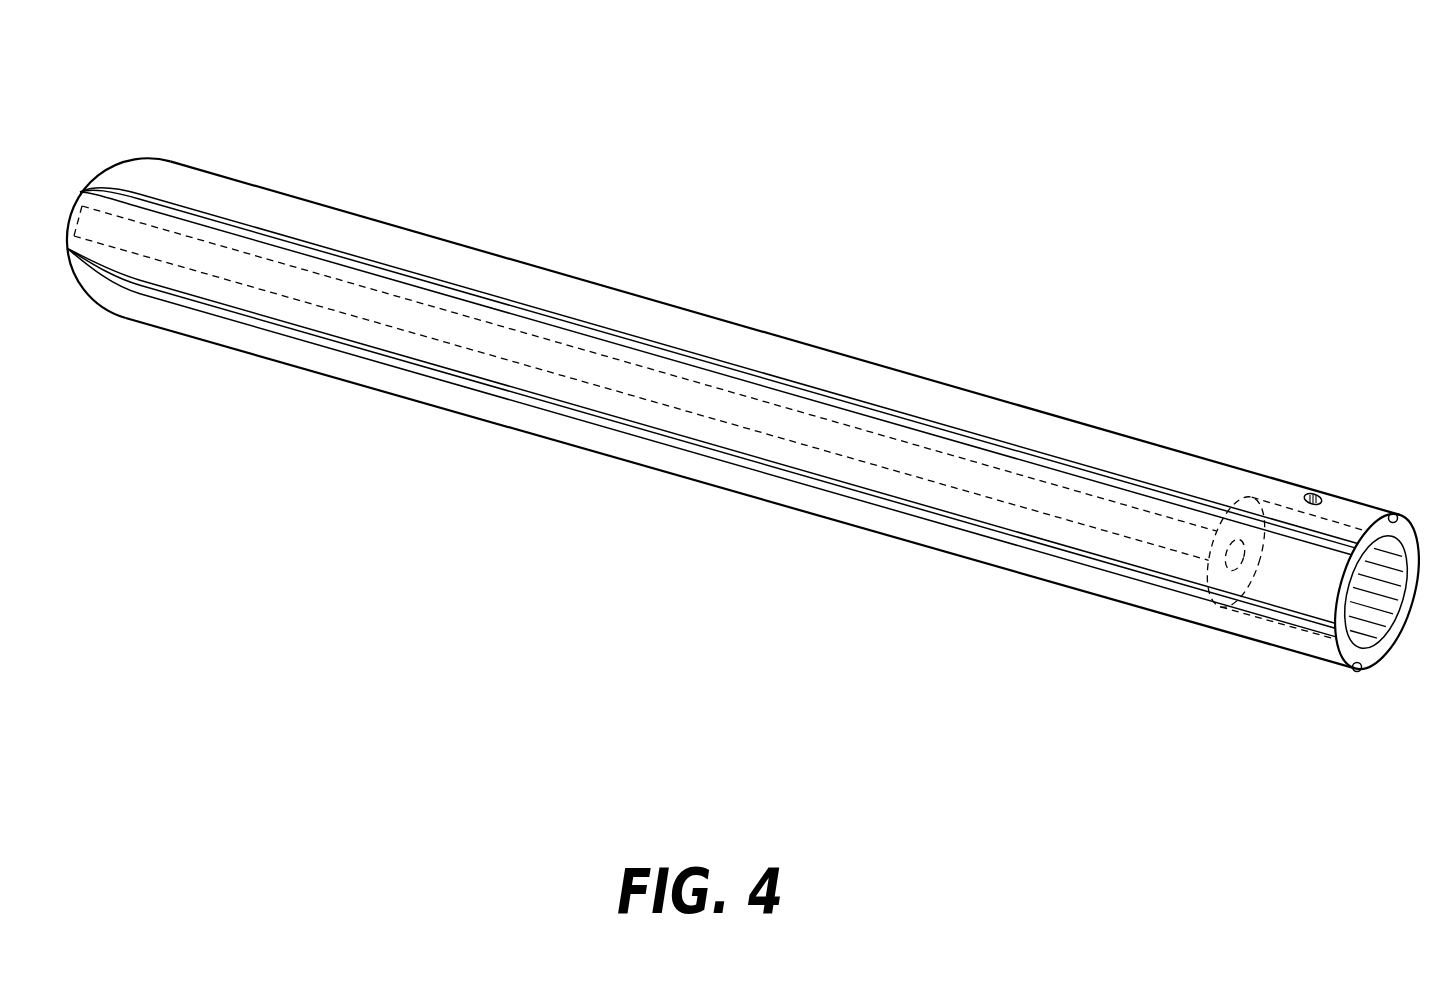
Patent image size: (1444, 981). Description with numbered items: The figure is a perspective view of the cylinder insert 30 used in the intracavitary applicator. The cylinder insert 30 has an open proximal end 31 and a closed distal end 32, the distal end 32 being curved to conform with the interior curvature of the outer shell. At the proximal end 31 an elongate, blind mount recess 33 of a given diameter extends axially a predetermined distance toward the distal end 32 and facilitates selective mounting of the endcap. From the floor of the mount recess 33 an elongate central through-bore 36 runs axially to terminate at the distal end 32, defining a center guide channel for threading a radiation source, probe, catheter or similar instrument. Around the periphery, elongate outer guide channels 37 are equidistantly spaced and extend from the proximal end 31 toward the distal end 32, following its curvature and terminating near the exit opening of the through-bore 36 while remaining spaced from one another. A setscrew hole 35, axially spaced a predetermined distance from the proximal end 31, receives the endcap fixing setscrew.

The cylinder insert 30 is at (763, 338).
The proximal end 31 is at (1388, 694).
The distal end 32 is at (93, 149).
The mount recess 33 is at (1387, 610).
The setscrew hole 35 is at (1314, 493).
The central through-bore 36 is at (800, 436).
The outer guide channels 37 is at (458, 296).